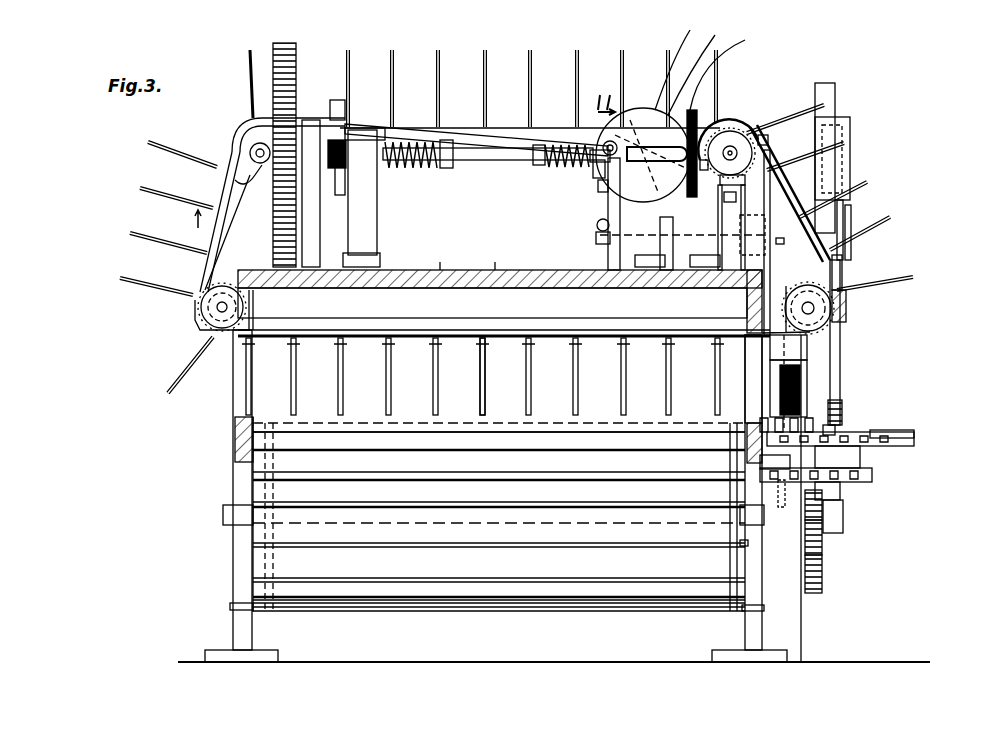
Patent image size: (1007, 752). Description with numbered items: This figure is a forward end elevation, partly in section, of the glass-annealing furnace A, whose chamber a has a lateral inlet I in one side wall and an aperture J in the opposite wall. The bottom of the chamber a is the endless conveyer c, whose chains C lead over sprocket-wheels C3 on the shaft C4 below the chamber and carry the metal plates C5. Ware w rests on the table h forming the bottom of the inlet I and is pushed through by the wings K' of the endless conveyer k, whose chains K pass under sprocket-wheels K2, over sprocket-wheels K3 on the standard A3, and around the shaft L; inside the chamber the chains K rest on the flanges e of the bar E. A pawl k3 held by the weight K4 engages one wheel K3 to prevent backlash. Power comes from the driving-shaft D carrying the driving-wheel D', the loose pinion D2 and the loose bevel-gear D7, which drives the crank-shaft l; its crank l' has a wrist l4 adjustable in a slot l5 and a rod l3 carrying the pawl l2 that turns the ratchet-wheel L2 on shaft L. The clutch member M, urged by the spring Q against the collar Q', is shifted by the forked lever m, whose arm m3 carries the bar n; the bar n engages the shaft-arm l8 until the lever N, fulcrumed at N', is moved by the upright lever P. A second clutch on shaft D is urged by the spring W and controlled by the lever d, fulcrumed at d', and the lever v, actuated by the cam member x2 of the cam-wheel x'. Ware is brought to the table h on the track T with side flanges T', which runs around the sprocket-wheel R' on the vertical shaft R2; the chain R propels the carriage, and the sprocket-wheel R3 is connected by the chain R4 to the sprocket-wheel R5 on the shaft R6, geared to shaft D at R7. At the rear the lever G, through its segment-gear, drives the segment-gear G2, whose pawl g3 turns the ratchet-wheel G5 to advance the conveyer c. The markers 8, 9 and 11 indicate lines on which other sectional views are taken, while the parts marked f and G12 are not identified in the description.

The aperture J is at (235, 400).
The chains C is at (270, 482).
The sprocket-wheels C3 is at (272, 524).
The metal plates C5 is at (460, 565).
The shaft C4 is at (757, 523).
The sprocket-wheel R5 is at (760, 505).
The chain R4 is at (762, 468).
The metal bar E is at (500, 301).
The annealing chamber a is at (440, 290).
The glass-annealing furnace A is at (495, 272).
The endless chains K is at (504, 319).
The wings K' is at (495, 215).
The endless conveyer k is at (530, 105).
The shaft L is at (210, 160).
The ratchet-wheel L2 is at (252, 170).
The pinion D2 is at (250, 200).
The sprocket-wheels K2 is at (258, 303).
The cam-forming member x2 is at (315, 100).
The pawl l2 is at (312, 118).
The lever v is at (345, 105).
The fulcrum pin d' is at (355, 198).
The cam-wheel x' is at (371, 195).
The lever d is at (370, 163).
The rod l3 is at (500, 138).
The driving-shaft D is at (488, 173).
The spring W is at (420, 168).
The spiral spring Q is at (561, 183).
The collar Q' is at (559, 188).
The clutch member M is at (598, 178).
The forked lever m is at (600, 192).
The lever-arm m3 is at (597, 225).
The bar n is at (596, 238).
The crank-shaft l is at (646, 117).
The crank l' is at (621, 172).
The wrist l4 is at (672, 61).
The slot l5 is at (692, 63).
The bevel-gear D7 is at (740, 40).
The pin 11 is at (598, 272).
The shaft-arm l8 is at (622, 220).
The lever N is at (659, 254).
The fulcrum N' is at (705, 285).
The pawl k3 is at (718, 178).
The sprocket-wheels K3 is at (720, 140).
The weight K4 is at (830, 182).
The gearing R7 is at (752, 149).
The standard A3 is at (717, 212).
The shaft R6 is at (748, 233).
The bolt 8 is at (783, 380).
The bar f is at (832, 95).
The driving-wheel D' is at (848, 177).
The post 9 is at (855, 245).
The upright lever P is at (875, 262).
The lever G is at (832, 318).
The table h is at (790, 368).
The ware w is at (842, 365).
The segment-gear G2 is at (835, 432).
The sprocket-wheel R' is at (921, 417).
The flanges T' is at (857, 432).
The endless chain R is at (841, 464).
The sprocket-wheel R3 is at (870, 495).
The shaft R2 is at (845, 520).
The gear G12 is at (830, 520).
The pawl g3 is at (825, 545).
The ratchet-wheel G5 is at (822, 582).
The endless track T is at (499, 462).
The inlet I is at (745, 358).
The flanges e is at (496, 340).
The endless conveyer c is at (506, 428).